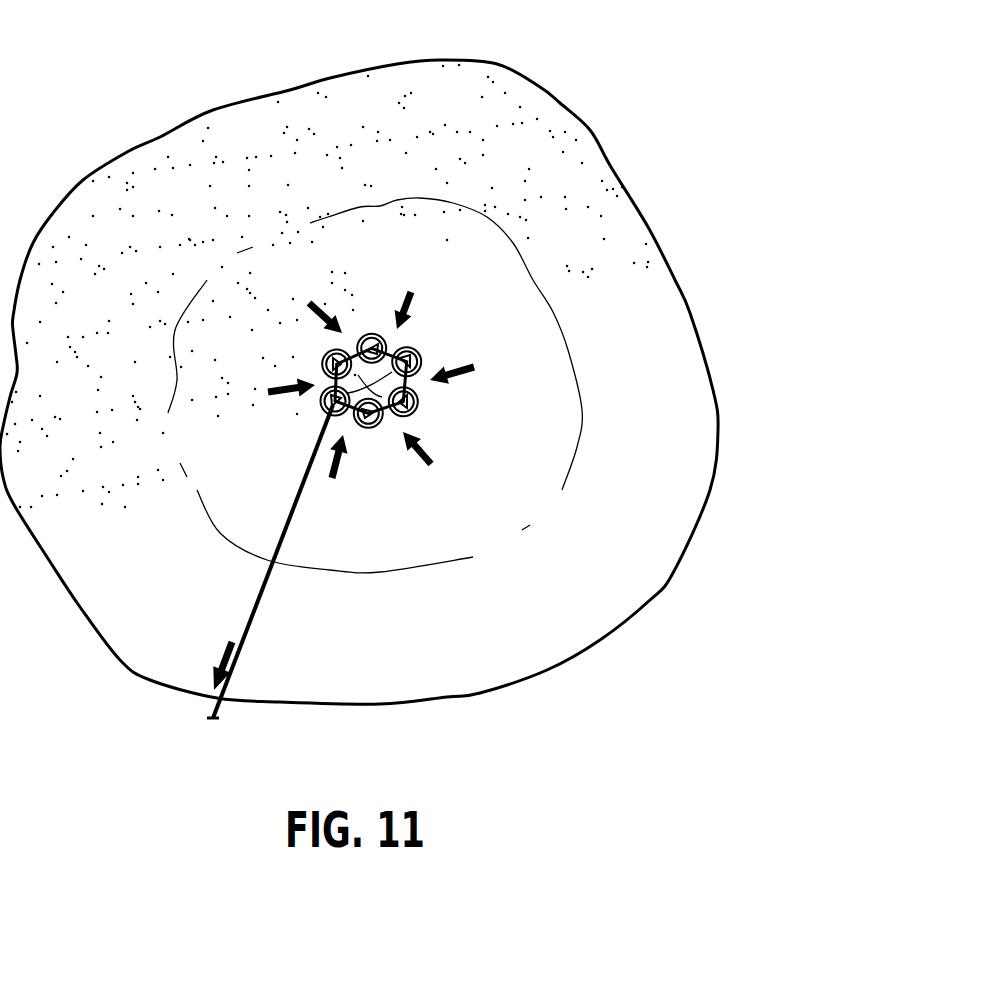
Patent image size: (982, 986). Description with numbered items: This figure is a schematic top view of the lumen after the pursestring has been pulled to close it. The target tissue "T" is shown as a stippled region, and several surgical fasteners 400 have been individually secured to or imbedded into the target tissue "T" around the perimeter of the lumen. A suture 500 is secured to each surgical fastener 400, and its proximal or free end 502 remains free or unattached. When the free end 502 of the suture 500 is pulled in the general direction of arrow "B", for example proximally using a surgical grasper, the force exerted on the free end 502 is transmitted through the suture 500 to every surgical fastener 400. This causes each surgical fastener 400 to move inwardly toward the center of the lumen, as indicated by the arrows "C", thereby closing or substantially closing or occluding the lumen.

The surgical fastener 400 is at (322, 355).
The suture 500 is at (351, 352).
The free end 502 is at (250, 607).
The target tissue T is at (527, 128).
The arrow B is at (213, 665).
The arrows C is at (377, 384).